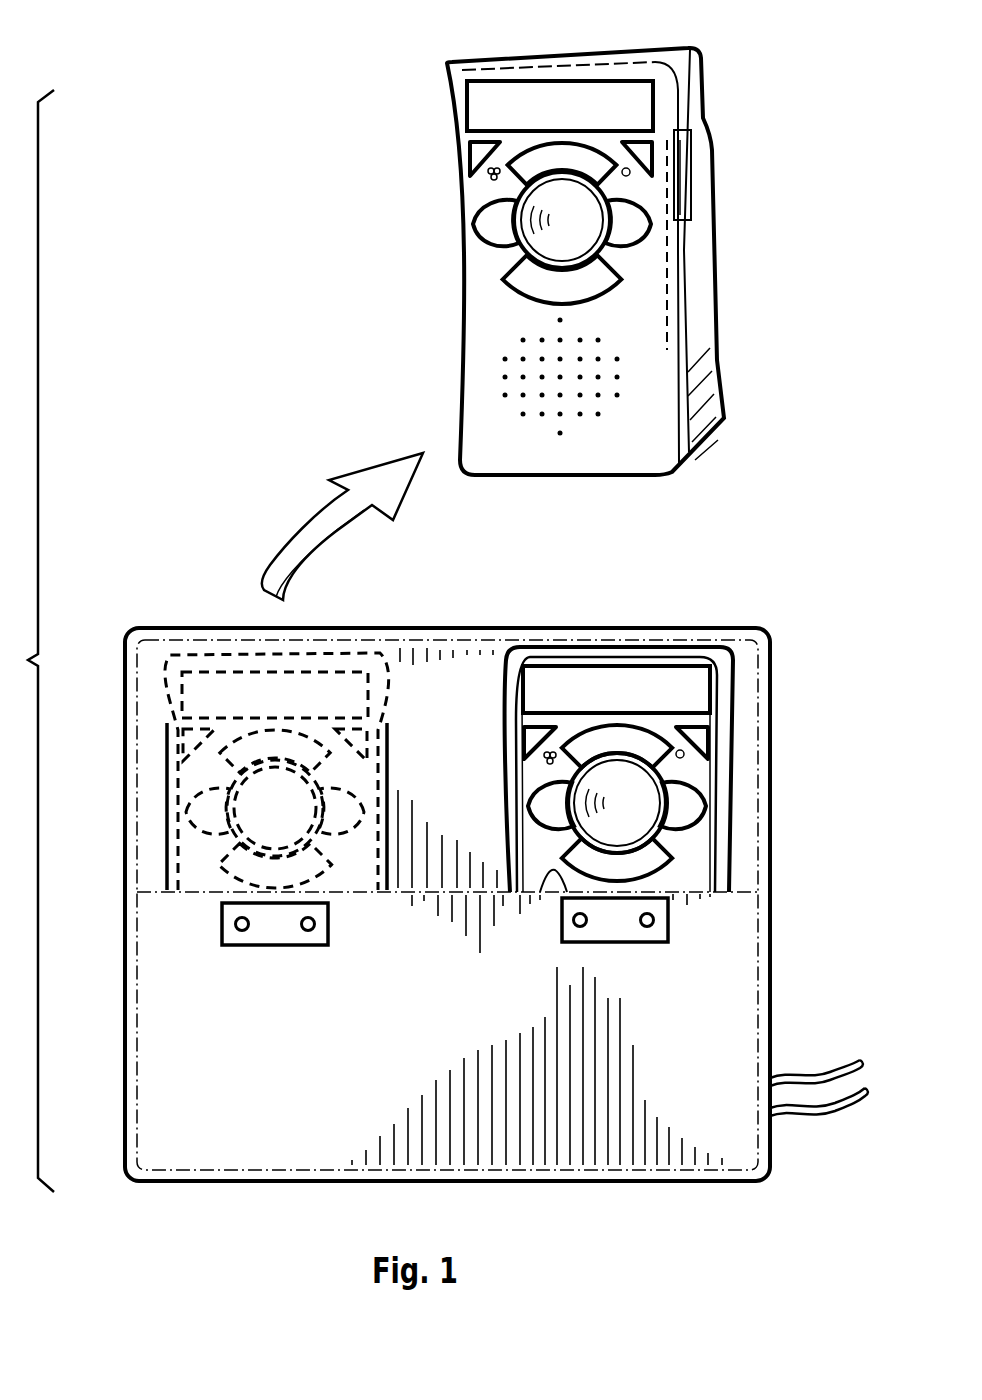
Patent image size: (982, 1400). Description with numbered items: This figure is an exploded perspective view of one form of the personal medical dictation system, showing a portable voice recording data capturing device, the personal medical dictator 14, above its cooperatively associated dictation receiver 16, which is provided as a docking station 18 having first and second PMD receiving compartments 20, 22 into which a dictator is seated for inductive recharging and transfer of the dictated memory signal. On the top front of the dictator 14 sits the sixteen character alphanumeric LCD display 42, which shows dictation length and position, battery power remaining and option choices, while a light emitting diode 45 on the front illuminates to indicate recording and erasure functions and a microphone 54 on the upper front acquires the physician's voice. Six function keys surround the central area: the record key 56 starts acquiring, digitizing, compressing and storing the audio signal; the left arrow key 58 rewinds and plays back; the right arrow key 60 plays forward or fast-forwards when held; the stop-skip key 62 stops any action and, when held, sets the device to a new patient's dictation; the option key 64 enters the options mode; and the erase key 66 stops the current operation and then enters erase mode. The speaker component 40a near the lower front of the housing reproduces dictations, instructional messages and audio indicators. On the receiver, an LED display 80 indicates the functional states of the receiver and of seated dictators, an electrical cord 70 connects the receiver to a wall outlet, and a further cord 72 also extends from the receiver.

The personal medical dictator 14 is at (703, 120).
The dictation receiver 16 is at (771, 903).
The docking station 18 is at (707, 1016).
The first PMD receiving compartment 20 is at (332, 880).
The second PMD receiving compartment 22 is at (540, 892).
The speaker component 40a is at (580, 398).
The LCD display 42 is at (488, 98).
The light emitting diode 45 is at (630, 175).
The microphone 54 is at (489, 178).
The record key 56 is at (490, 181).
The left arrow key 58 is at (480, 241).
The right arrow key 60 is at (653, 226).
The stop-skip key 62 is at (618, 284).
The option key 64 is at (468, 152).
The erase key 66 is at (657, 153).
The electrical cord 70 is at (840, 1107).
The data cable 72 is at (802, 1078).
The LED display 80 is at (287, 938).